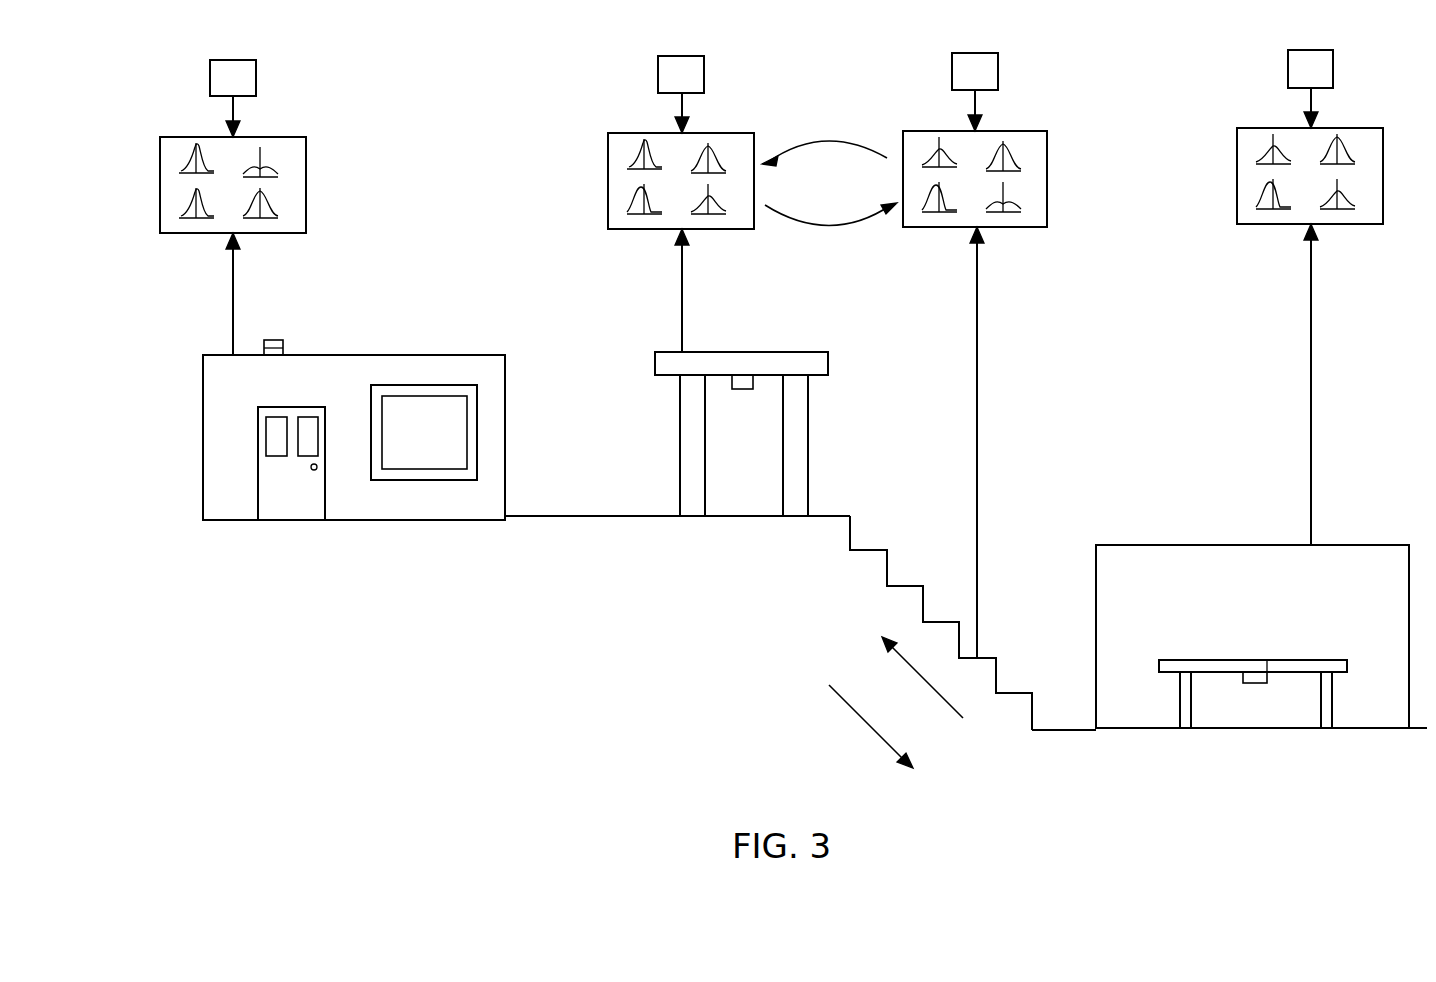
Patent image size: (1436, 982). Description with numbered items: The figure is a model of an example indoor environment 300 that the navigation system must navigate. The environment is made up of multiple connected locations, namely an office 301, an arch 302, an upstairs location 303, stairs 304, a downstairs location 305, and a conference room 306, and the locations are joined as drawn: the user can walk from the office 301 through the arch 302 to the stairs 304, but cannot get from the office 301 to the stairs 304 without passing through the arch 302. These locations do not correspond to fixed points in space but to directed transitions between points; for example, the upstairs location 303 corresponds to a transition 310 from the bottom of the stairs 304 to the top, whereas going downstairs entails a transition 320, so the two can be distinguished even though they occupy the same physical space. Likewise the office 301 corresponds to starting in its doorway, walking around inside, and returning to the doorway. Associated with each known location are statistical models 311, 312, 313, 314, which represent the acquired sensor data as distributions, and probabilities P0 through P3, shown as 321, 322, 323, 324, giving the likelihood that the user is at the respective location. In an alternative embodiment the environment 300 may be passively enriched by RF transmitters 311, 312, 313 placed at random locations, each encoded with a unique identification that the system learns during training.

The indoor environment 300 is at (586, 680).
The office 301 is at (347, 355).
The arch 302 is at (754, 330).
The upstairs location 303 is at (604, 498).
The stairs 304 is at (903, 585).
The downstairs location 305 is at (1055, 730).
The conference room 306 is at (1235, 545).
The transition 310 is at (835, 146).
The transition 320 is at (822, 223).
The statistical model 311 is at (281, 137).
The statistical model 312 is at (727, 133).
The statistical model 313 is at (1020, 131).
The statistical model 314 is at (1355, 128).
The probability P0 321 is at (256, 78).
The probability P1 322 is at (704, 77).
The probability P2 323 is at (998, 75).
The probability P3 324 is at (1333, 72).